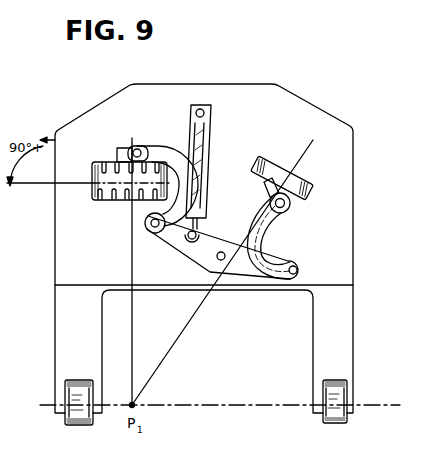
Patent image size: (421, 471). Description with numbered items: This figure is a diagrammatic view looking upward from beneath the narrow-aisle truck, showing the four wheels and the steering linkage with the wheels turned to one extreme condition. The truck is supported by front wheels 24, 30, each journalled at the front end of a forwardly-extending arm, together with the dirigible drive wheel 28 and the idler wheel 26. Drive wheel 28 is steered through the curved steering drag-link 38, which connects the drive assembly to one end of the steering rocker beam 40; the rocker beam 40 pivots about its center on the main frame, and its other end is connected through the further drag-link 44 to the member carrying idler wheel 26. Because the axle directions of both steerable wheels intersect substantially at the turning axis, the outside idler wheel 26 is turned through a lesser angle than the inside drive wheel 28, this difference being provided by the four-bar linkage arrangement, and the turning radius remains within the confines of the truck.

The front wheel 24 is at (341, 419).
The idler wheel 26 is at (301, 184).
The dirigible wheel 28 is at (105, 164).
The front wheel 30 is at (86, 422).
The steering drag-link 38 is at (176, 128).
The steering rocker beam 40 is at (198, 252).
The drag-link 44 is at (262, 240).